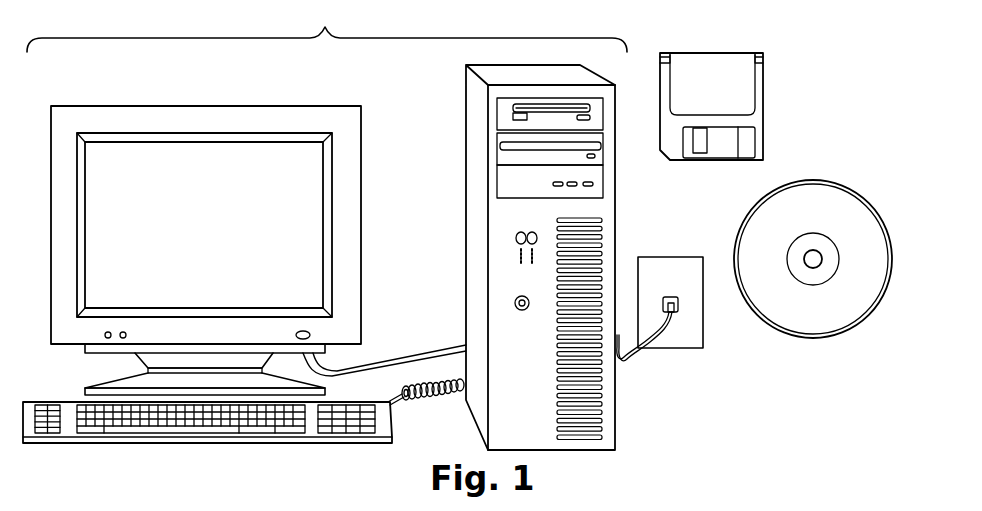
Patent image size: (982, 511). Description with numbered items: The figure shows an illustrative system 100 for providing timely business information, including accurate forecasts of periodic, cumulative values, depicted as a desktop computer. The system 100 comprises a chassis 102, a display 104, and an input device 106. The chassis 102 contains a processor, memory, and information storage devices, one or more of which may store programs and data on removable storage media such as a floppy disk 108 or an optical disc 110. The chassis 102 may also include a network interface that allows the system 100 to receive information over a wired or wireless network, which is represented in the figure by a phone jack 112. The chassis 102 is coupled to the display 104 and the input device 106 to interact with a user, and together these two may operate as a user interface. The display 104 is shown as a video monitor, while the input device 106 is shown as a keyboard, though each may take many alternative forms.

The system 100 is at (327, 26).
The chassis 102 is at (466, 293).
The display 104 is at (72, 347).
The input device 106 is at (65, 445).
The floppy disk 108 is at (767, 137).
The optical disc 110 is at (830, 183).
The phone jack 112 is at (662, 253).